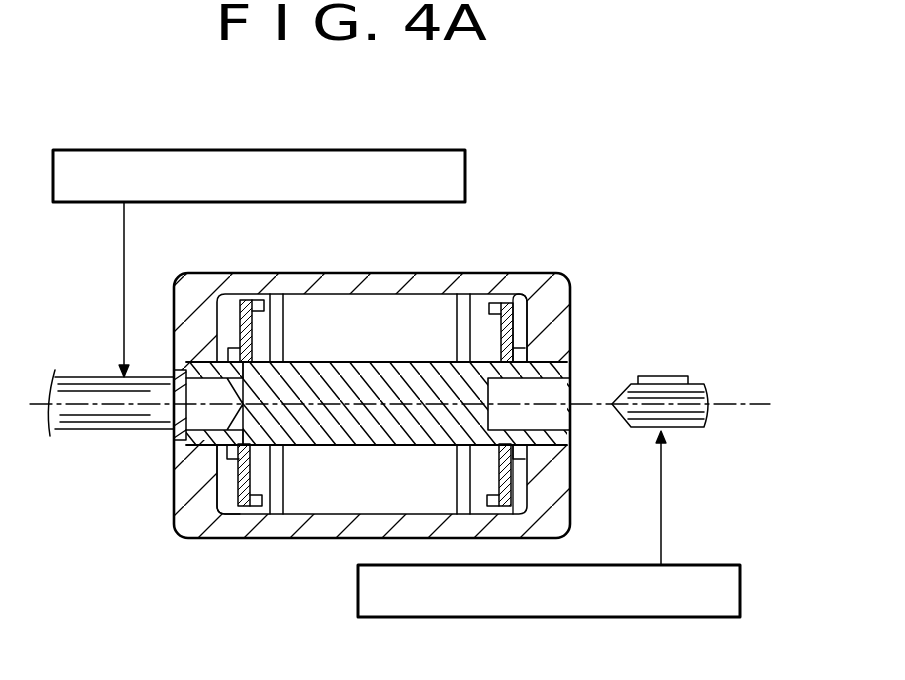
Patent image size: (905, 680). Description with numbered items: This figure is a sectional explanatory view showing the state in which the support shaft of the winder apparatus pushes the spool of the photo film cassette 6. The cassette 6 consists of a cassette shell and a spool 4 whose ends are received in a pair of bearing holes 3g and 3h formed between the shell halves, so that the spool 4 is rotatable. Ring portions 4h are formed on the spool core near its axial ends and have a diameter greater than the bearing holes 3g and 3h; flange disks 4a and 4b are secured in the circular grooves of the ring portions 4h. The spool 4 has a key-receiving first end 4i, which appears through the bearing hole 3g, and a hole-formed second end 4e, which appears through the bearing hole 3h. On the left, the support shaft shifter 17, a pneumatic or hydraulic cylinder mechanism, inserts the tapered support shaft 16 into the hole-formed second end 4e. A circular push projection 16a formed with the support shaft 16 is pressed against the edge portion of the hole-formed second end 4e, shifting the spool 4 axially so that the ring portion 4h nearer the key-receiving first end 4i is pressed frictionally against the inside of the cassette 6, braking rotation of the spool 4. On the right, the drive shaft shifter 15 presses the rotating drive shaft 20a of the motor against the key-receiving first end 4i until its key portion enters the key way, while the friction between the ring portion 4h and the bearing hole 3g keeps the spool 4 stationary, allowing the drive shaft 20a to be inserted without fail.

The support shaft shifter 17 is at (266, 150).
The drive shaft shifter 15 is at (538, 617).
The support shaft 16 is at (84, 432).
The push projection 16a is at (180, 446).
The photo film cassette 6 is at (448, 273).
The bearing hole 3g is at (524, 288).
The bearing hole 3h is at (208, 466).
The spool 4 is at (360, 444).
The flange disk 4a is at (524, 507).
The flange disk 4b is at (250, 300).
The hole-formed second end 4e is at (241, 406).
The ring portions 4h is at (237, 346).
The key-receiving first end 4i is at (557, 393).
The drive shaft 20a is at (712, 428).